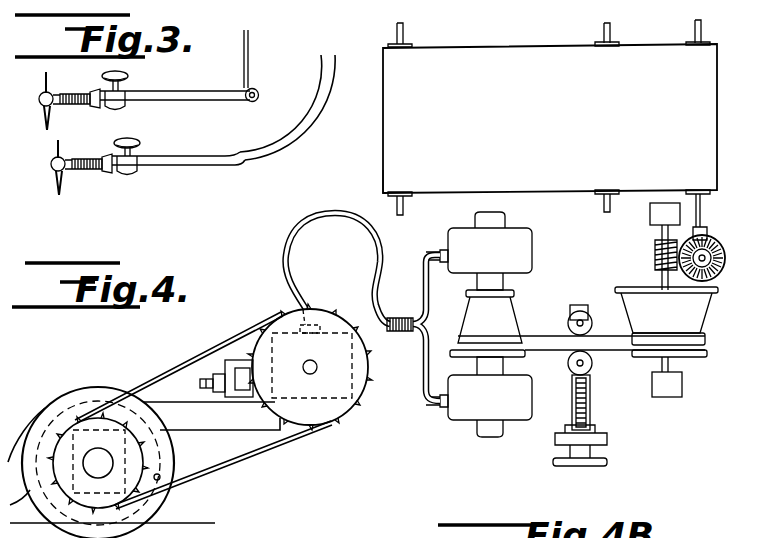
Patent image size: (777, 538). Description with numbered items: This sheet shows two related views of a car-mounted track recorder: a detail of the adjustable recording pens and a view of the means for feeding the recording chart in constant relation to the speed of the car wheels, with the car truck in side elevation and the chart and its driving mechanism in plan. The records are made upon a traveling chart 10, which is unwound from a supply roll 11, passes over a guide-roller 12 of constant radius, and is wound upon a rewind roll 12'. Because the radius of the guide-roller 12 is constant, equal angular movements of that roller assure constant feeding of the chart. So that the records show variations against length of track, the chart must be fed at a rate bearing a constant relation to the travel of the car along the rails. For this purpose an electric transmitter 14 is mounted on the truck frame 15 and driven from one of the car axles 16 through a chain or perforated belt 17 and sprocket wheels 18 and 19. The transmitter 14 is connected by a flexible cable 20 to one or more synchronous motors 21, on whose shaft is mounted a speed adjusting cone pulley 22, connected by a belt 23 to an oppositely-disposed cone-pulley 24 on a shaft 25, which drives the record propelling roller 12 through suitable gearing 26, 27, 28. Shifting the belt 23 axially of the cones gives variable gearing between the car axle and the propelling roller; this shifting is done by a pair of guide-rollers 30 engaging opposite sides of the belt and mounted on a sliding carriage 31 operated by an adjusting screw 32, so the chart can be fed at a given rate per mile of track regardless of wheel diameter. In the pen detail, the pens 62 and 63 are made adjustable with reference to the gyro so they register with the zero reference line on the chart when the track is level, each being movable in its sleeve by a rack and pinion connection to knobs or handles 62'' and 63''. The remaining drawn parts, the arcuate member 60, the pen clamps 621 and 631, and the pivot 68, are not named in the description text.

In FIG. 4, the traveling chart 10 is at (550, 118).
In FIG. 4, the supply roll 11 is at (383, 196).
In FIG. 4, the guide-roller 12 is at (549, 33).
In FIG. 4, the rewind roll 12' is at (503, 230).
In FIG. 4, the electric transmitter 14 is at (350, 365).
In FIG. 4, the truck frame 15 is at (238, 411).
In FIG. 4, the car axle 16 is at (90, 458).
In FIG. 4, the chain or perforated belt 17 is at (183, 372).
In FIG. 4, the sprocket wheel 18 is at (154, 476).
In FIG. 4, the sprocket wheel 19 is at (320, 398).
In FIG. 4, the flexible cable 20 is at (311, 228).
In FIG. 4, the synchronous motors 21 is at (540, 225).
In FIG. 4, the cone pulley 22 is at (470, 324).
In FIG. 4, the belt 23 is at (530, 336).
In FIG. 4, the cone-pulley 24 is at (708, 318).
In FIG. 4, the shaft 25 is at (684, 376).
In FIG. 4, the gearing 26 is at (656, 252).
In FIG. 4, the gearing 27 is at (724, 266).
In FIG. 4, the gearing 28 is at (712, 244).
In FIG. 4, the guide-rollers 30 is at (590, 321).
In FIG. 4, the sliding carriage 31 is at (592, 392).
In FIG. 4, the adjusting screw 32 is at (575, 397).
In FIG. 3, the arcuate guide 60 is at (314, 122).
In FIG. 3, the pen 62 is at (30, 98).
In FIG. 3, the clamp 621 is at (90, 93).
In FIG. 3, the knob or handle 62'' is at (153, 85).
In FIG. 3, the pen 63 is at (41, 181).
In FIG. 3, the clamp 631 is at (97, 178).
In FIG. 3, the knob or handle 63'' is at (162, 151).
In FIG. 3, the pivot 68 is at (270, 32).